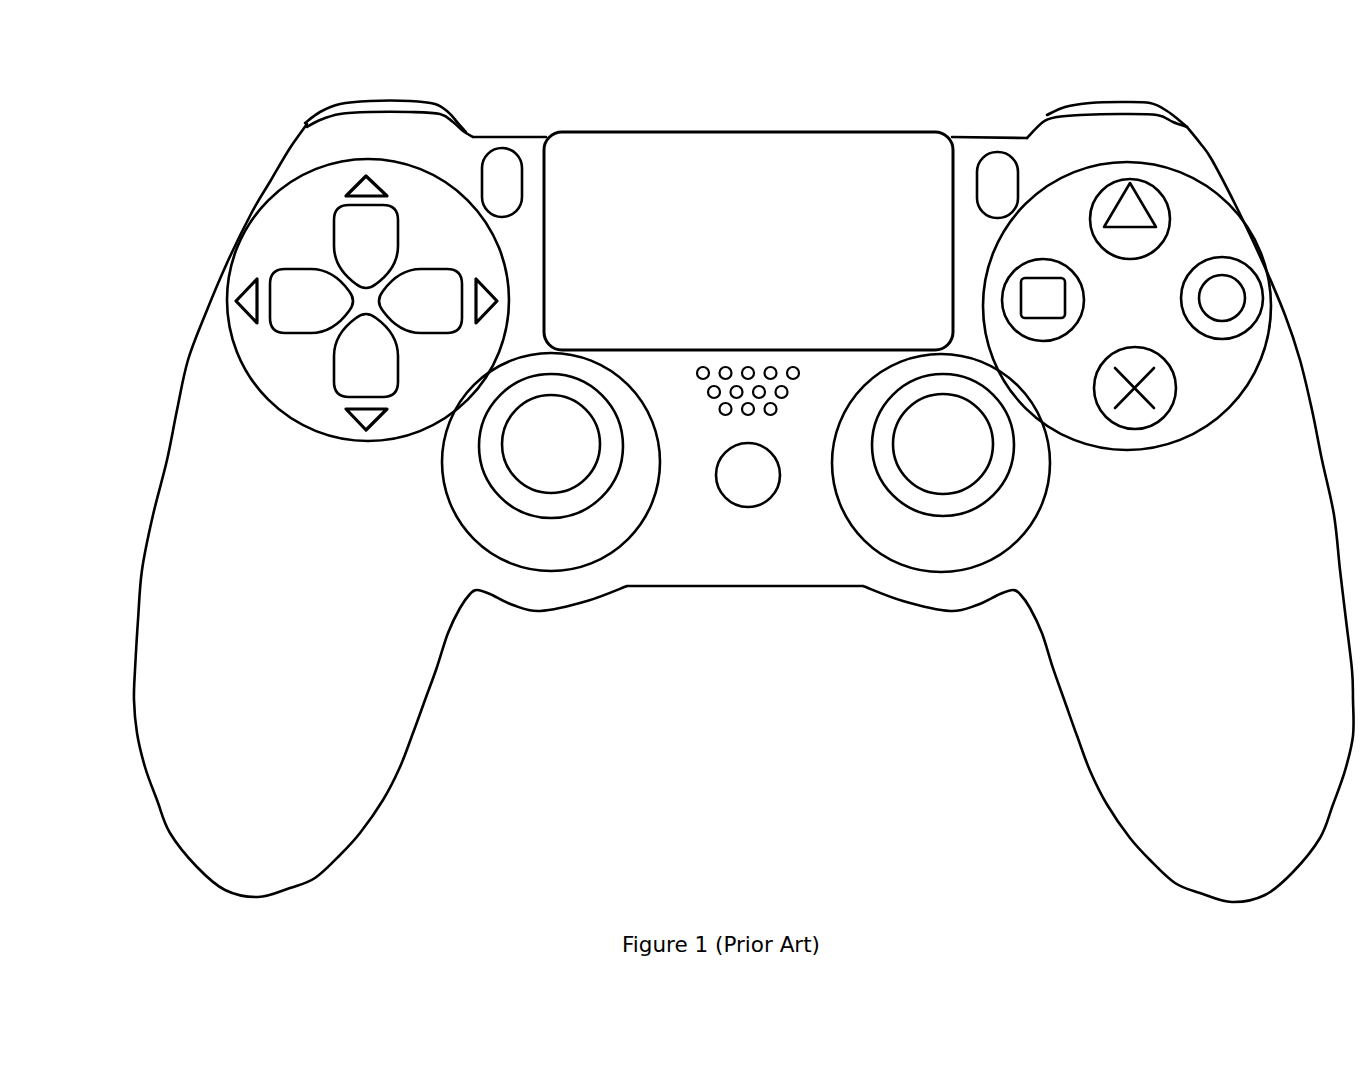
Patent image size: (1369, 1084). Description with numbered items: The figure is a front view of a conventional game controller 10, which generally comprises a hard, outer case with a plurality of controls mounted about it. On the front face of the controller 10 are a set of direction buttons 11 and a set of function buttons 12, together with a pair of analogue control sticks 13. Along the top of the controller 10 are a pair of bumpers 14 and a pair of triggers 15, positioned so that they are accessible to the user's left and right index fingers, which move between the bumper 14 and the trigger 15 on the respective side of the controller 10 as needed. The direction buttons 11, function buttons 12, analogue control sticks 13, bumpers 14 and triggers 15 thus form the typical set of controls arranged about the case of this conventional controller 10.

The controller 10 is at (222, 153).
The direction buttons 11 is at (313, 268).
The function buttons 12 is at (1251, 280).
The analogue control sticks 13 is at (573, 520).
The bumpers 14 is at (420, 103).
The triggers 15 is at (1083, 103).